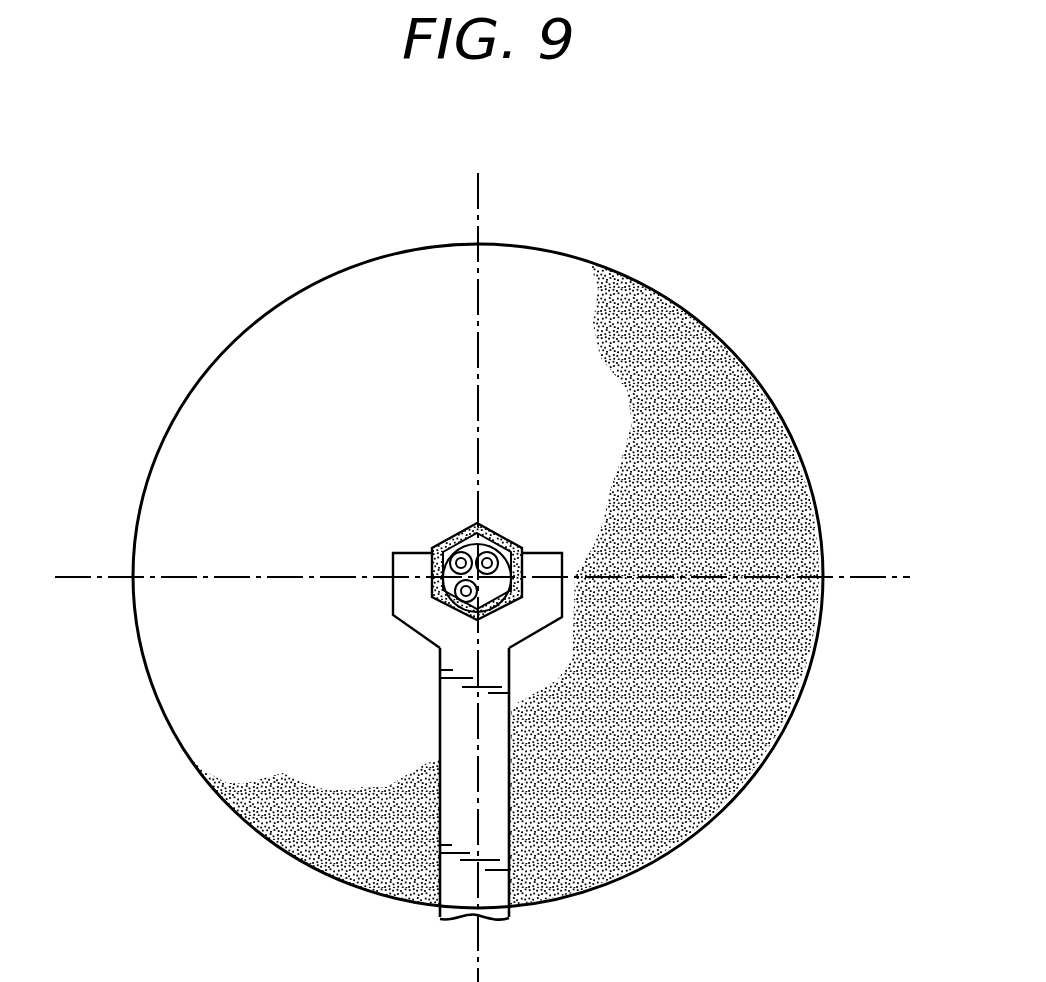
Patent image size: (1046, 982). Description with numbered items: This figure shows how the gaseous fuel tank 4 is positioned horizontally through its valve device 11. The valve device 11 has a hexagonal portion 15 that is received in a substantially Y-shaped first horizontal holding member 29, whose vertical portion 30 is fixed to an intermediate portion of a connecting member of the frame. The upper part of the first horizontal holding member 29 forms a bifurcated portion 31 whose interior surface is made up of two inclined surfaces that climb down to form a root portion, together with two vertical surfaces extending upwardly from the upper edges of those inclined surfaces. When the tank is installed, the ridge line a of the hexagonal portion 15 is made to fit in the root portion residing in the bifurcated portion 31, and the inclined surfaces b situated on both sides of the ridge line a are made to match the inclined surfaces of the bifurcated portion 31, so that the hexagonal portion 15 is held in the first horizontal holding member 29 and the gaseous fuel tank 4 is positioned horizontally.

The gaseous fuel tank 4 is at (743, 357).
The valve device 11 is at (457, 527).
The hexagonal portion 15 is at (495, 526).
The first horizontal holding member 29 is at (438, 790).
The vertical portion 30 is at (497, 830).
The bifurcated portion 31 is at (568, 556).
The ridge line a is at (482, 605).
The inclined surfaces b is at (446, 606).